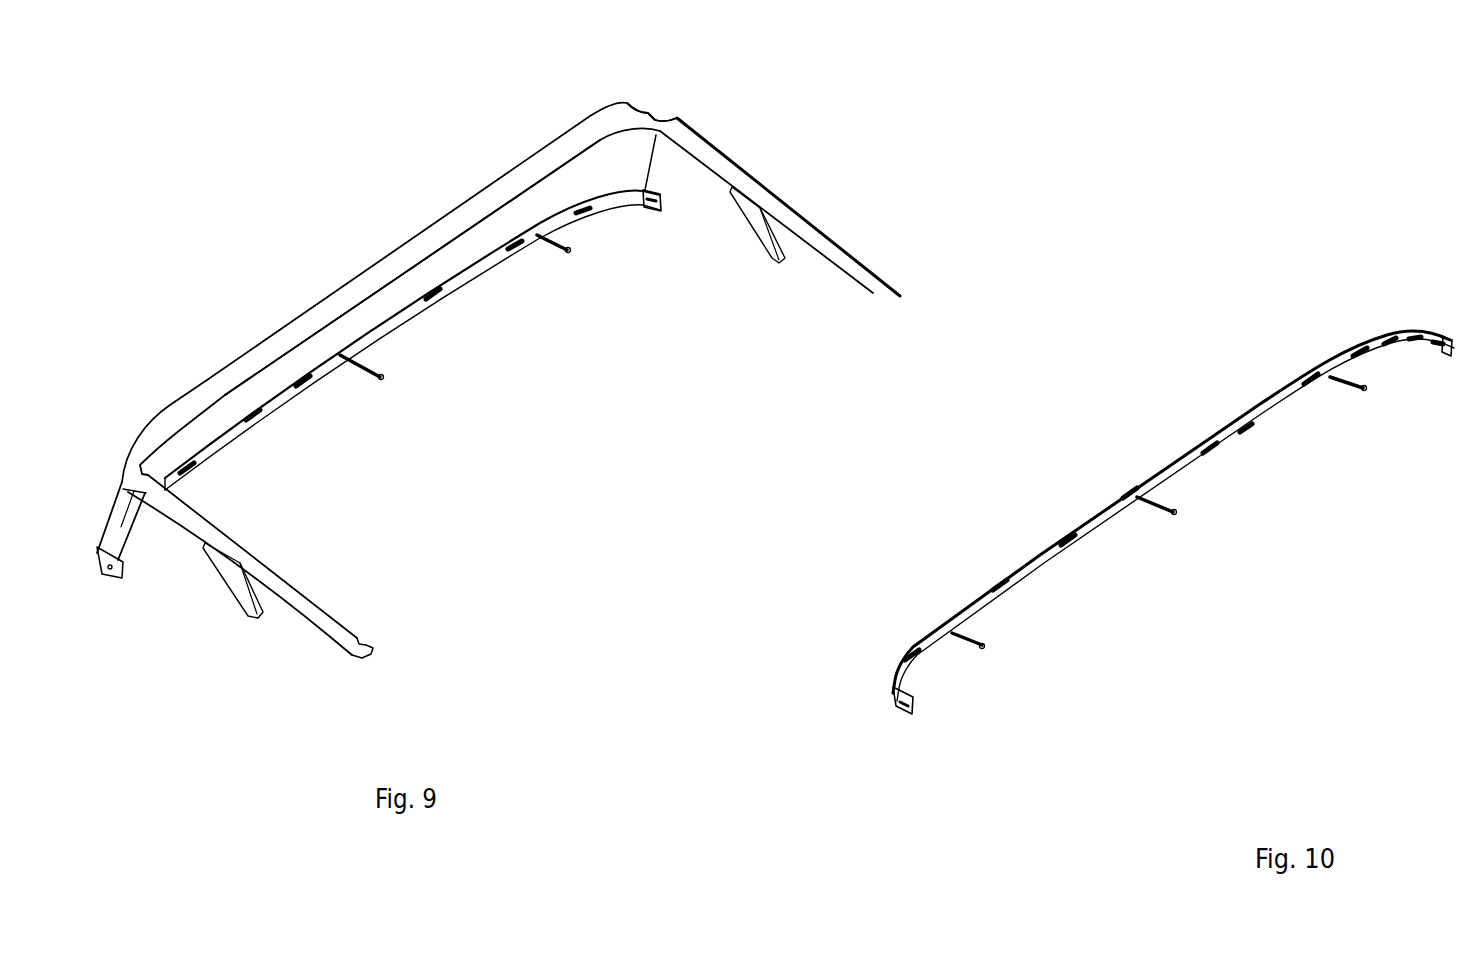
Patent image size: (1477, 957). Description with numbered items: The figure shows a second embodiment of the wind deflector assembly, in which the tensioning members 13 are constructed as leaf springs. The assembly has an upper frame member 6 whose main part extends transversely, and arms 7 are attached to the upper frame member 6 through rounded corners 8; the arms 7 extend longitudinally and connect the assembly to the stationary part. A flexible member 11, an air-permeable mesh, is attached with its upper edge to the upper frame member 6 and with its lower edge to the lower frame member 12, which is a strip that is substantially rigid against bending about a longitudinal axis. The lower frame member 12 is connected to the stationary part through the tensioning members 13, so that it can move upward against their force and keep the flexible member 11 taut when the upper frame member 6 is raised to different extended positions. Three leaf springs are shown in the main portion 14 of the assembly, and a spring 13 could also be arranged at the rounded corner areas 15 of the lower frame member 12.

In FIG. 9, the upper frame member 6 is at (338, 291).
In FIG. 9, the arms 7 is at (820, 223).
In FIG. 9, the rounded corners 8 is at (652, 118).
In FIG. 9, the flexible member 11 is at (467, 252).
In FIG. 9, the lower frame member 12 is at (302, 378).
In FIG. 10, the lower frame member 12 is at (1257, 402).
In FIG. 9, the tensioning members 13 is at (567, 207).
In FIG. 10, the tensioning members 13 is at (965, 637).
In FIG. 9, the main portion 14 is at (229, 423).
In FIG. 10, the main portion 14 is at (1090, 517).
In FIG. 9, the rounded corner areas 15 is at (625, 193).
In FIG. 10, the rounded corner areas 15 is at (895, 690).